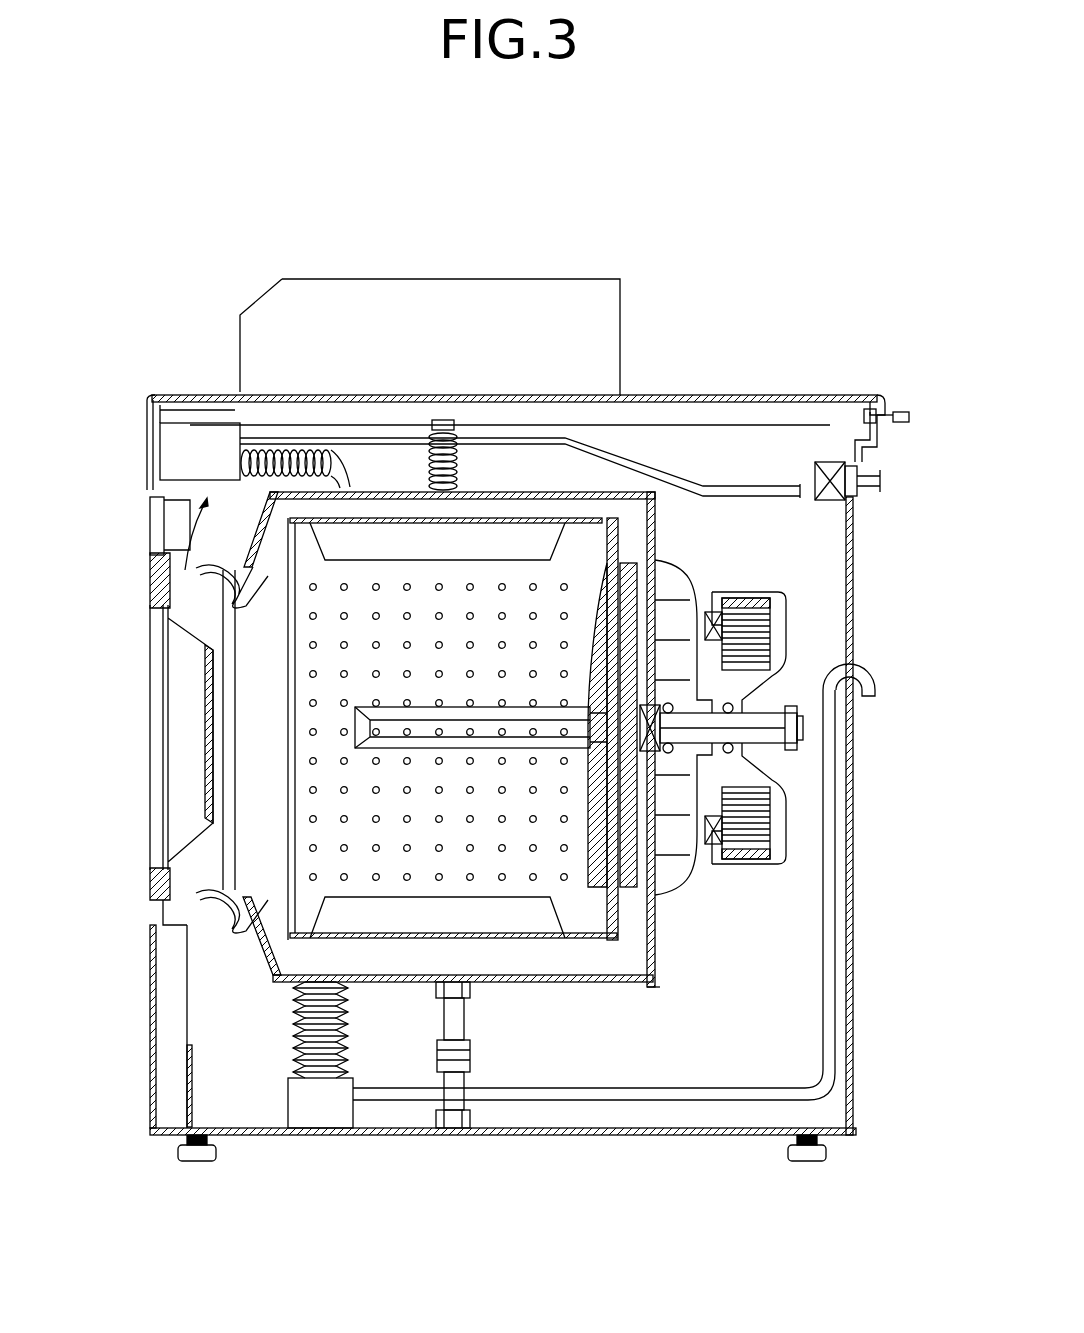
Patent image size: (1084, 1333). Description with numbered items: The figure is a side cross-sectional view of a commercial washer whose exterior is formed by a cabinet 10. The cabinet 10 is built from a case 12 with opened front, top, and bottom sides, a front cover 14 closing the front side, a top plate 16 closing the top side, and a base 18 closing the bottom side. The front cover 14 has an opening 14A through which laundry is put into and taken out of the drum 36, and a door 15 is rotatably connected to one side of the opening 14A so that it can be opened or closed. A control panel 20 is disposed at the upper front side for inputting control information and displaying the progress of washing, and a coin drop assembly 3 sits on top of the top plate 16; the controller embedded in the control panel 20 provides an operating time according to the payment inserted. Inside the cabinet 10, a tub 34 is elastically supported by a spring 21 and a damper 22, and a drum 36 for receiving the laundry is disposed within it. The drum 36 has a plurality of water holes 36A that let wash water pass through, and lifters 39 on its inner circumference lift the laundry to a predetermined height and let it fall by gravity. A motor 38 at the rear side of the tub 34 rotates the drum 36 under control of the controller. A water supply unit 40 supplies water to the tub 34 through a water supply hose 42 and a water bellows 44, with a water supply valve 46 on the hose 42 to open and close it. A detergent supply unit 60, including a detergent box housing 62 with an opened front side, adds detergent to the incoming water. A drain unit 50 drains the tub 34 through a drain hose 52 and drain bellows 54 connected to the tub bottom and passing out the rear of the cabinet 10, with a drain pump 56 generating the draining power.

The coin drop assembly 3 is at (413, 345).
The cabinet 10 is at (868, 777).
The case 12 is at (855, 860).
The front cover 14 is at (155, 510).
The opening 14A is at (152, 552).
The door 15 is at (175, 700).
The top plate 16 is at (737, 395).
The base 18 is at (695, 1138).
The control panel 20 is at (160, 415).
The spring 21 is at (447, 395).
The damper 22 is at (470, 1048).
The tub 34 is at (672, 940).
The drum 36 is at (657, 930).
The water holes 36A is at (662, 848).
The motor 38 is at (775, 615).
The lifters 39 is at (548, 918).
The water supply unit 40 is at (834, 516).
The water supply hose 42 is at (640, 460).
The water bellows 44 is at (317, 450).
The water supply valve 46 is at (822, 462).
The drain unit 50 is at (467, 964).
The drain hose 52 is at (614, 937).
The bellows 54 is at (300, 1040).
The drain pump 56 is at (330, 1110).
The detergent supply unit 60 is at (160, 565).
The detergent box housing 62 is at (253, 400).